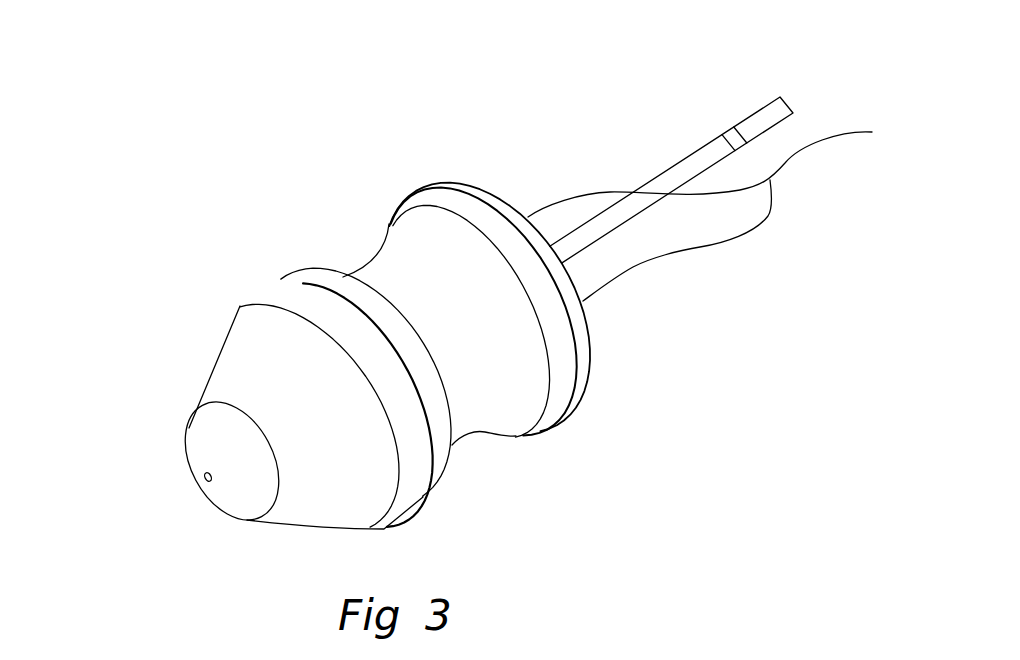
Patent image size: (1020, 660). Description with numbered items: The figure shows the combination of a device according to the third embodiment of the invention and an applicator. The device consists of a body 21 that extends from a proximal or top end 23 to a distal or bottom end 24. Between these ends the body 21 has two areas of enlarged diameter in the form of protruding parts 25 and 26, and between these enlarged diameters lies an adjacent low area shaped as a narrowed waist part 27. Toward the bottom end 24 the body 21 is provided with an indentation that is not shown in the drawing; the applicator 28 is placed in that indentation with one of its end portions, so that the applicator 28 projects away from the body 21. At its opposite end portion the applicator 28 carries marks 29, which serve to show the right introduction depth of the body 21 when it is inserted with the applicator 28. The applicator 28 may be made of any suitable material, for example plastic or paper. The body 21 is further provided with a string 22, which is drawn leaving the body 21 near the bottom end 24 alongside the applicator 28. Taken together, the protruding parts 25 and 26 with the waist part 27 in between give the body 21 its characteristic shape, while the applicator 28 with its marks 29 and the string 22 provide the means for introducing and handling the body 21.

The body 21 is at (340, 150).
The string 22 is at (633, 267).
The proximal or top end 23 is at (198, 447).
The distal or bottom end 24 is at (527, 218).
The protruding part 25 is at (560, 350).
The protruding part 26 is at (422, 497).
The waist part 27 is at (478, 407).
The applicator 28 is at (778, 104).
The marks 29 is at (722, 135).